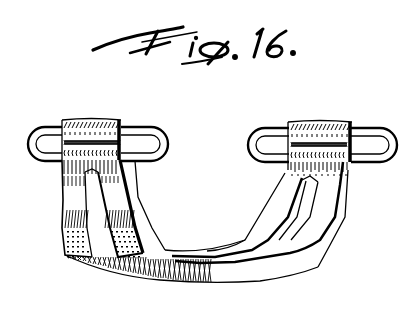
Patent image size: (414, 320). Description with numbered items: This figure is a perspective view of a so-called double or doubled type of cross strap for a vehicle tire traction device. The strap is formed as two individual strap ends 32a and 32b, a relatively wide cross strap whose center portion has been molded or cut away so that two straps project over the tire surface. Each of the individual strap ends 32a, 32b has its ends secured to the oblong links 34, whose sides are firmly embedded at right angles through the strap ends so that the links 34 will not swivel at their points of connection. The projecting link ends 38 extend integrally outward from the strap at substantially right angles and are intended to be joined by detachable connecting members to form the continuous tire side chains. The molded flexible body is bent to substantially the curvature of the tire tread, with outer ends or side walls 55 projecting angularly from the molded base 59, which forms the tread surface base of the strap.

The link ends 38 is at (41, 127).
The oblong links 34 is at (139, 127).
The individual strap end 32a is at (76, 193).
The individual strap end 32b is at (133, 201).
The side walls 55 is at (135, 191).
The molded base 59 is at (263, 268).